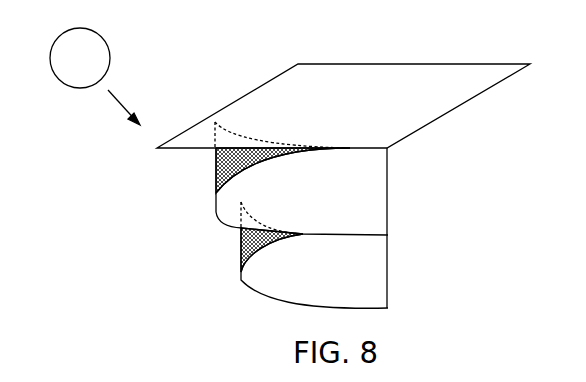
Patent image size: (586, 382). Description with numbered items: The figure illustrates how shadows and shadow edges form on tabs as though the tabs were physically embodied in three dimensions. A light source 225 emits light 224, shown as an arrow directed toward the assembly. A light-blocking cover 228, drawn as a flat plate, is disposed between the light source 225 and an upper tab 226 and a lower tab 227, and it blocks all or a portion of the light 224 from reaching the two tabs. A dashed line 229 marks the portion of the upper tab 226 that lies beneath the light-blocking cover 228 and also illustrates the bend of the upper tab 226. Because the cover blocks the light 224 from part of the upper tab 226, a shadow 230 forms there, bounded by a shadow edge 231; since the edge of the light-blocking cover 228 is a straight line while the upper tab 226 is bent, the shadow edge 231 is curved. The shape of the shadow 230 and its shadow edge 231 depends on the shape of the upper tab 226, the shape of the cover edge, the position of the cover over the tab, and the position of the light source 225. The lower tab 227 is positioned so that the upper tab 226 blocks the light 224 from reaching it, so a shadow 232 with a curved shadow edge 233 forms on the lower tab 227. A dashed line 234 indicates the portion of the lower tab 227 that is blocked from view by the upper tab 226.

The light 224 is at (120, 102).
The light source 225 is at (100, 45).
The upper tab 226 is at (383, 190).
The lower tab 227 is at (383, 272).
The light-blocking cover 228 is at (340, 70).
The dashed line 229 is at (238, 137).
The shadow 230 is at (216, 167).
The shadow edge 231 is at (243, 173).
The shadow 232 is at (241, 248).
The shadow edge 233 is at (267, 248).
The dashed line 234 is at (282, 225).